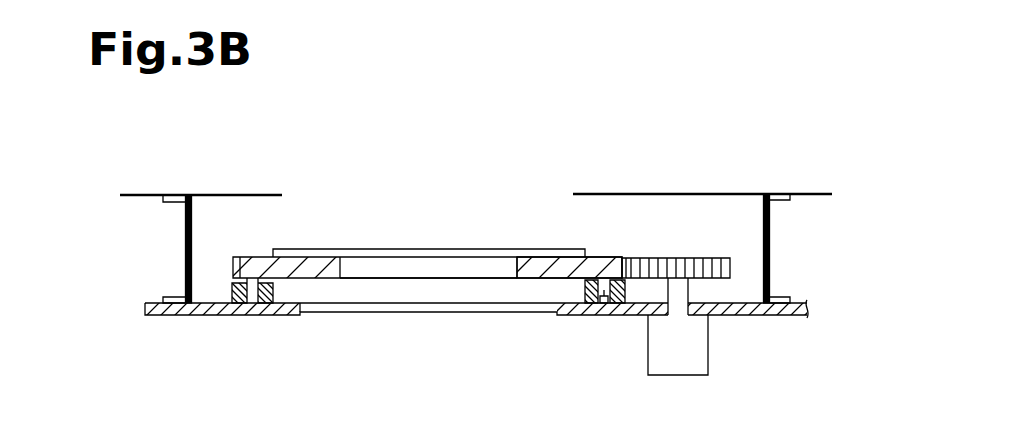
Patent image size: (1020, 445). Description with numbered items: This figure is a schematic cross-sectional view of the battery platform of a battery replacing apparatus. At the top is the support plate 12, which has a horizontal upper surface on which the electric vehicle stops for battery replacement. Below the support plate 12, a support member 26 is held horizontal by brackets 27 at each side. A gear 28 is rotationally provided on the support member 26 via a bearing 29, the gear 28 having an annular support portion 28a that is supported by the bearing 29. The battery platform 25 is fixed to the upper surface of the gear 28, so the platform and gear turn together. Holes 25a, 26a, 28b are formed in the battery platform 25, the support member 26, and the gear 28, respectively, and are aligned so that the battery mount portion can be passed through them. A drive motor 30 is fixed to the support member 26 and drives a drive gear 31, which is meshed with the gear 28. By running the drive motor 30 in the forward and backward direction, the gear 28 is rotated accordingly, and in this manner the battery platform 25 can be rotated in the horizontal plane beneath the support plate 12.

The support plate 12 is at (205, 194).
The battery platform 25 is at (532, 255).
The hole 25a is at (343, 256).
The support member 26 is at (156, 316).
The hole 26a is at (304, 313).
The brackets 27 is at (185, 250).
The gear 28 is at (597, 258).
The annular support portion 28a is at (604, 303).
The hole 28b is at (516, 268).
The bearing 29 is at (232, 294).
The drive motor 30 is at (700, 351).
The drive gear 31 is at (687, 263).